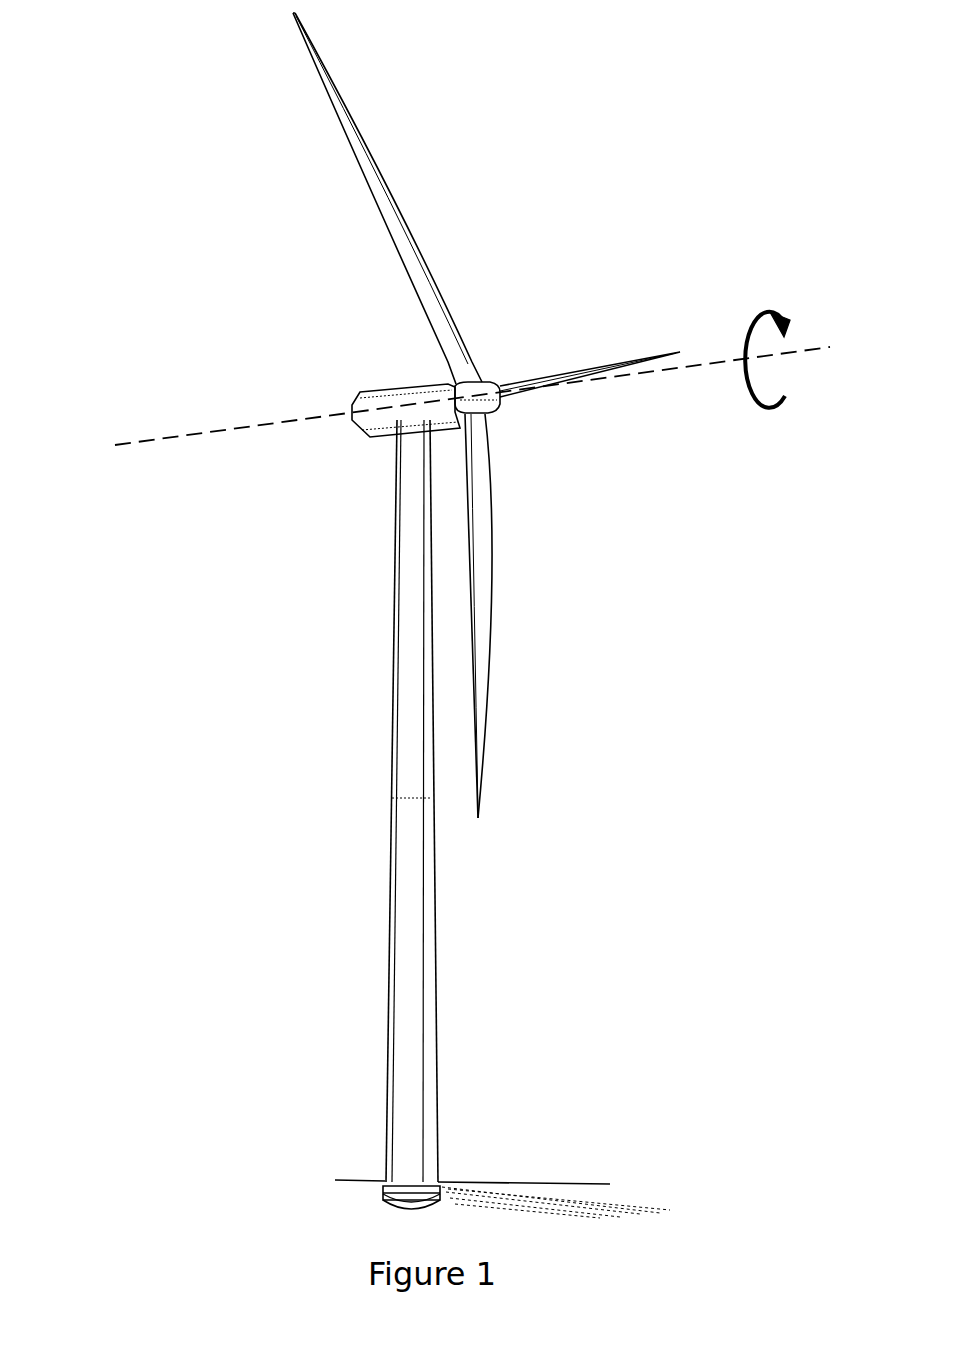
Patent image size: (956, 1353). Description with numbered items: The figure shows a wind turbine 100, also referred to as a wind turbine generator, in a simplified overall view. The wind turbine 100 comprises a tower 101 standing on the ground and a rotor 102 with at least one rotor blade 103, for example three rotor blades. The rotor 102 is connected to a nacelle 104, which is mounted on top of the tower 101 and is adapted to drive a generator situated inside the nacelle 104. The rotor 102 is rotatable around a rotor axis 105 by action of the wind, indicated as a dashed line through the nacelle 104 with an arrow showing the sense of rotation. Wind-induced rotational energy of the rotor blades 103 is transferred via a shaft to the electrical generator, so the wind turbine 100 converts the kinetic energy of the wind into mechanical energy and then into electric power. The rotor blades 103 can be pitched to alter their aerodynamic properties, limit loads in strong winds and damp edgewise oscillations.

The wind turbine 100 is at (700, 963).
The tower 101 is at (405, 980).
The rotor 102 is at (535, 292).
The rotor blade 103 is at (484, 633).
The nacelle 104 is at (375, 400).
The rotor axis 105 is at (225, 428).